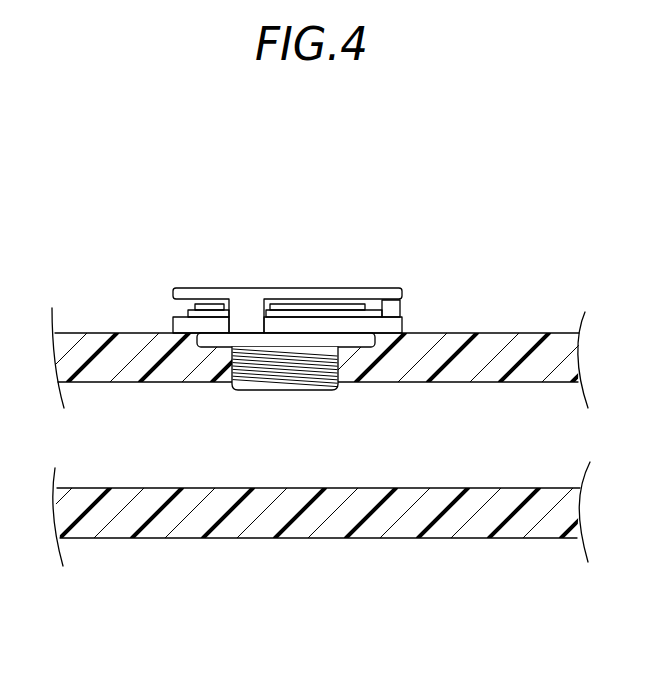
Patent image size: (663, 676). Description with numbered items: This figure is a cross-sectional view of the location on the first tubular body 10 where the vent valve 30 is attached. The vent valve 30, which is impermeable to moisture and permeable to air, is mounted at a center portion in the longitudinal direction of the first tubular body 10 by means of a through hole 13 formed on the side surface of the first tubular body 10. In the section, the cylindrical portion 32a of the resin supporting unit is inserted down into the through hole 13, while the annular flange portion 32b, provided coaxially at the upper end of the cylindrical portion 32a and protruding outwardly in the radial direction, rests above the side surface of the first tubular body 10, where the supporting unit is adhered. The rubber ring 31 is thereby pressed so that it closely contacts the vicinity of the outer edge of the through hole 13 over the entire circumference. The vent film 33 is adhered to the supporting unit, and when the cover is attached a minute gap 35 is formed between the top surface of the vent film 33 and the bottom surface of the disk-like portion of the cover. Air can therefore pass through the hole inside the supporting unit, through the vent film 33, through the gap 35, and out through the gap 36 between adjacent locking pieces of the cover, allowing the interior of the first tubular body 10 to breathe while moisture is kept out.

The first tubular body 10 is at (473, 442).
The through hole 13 is at (338, 371).
The vent valve 30 is at (230, 250).
The rubber ring 31 is at (410, 342).
The cylindrical portion 32a is at (252, 389).
The annular flange portion 32b is at (406, 320).
The vent film 33 is at (349, 308).
The gap 35 is at (322, 304).
The gap 36 is at (186, 313).